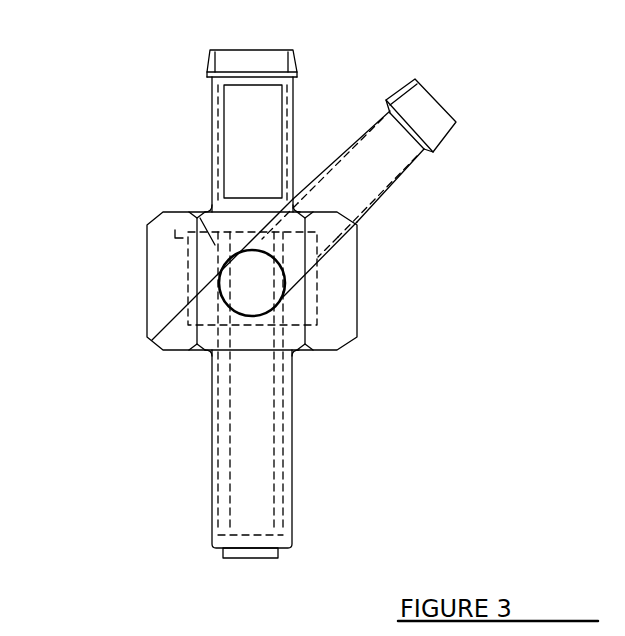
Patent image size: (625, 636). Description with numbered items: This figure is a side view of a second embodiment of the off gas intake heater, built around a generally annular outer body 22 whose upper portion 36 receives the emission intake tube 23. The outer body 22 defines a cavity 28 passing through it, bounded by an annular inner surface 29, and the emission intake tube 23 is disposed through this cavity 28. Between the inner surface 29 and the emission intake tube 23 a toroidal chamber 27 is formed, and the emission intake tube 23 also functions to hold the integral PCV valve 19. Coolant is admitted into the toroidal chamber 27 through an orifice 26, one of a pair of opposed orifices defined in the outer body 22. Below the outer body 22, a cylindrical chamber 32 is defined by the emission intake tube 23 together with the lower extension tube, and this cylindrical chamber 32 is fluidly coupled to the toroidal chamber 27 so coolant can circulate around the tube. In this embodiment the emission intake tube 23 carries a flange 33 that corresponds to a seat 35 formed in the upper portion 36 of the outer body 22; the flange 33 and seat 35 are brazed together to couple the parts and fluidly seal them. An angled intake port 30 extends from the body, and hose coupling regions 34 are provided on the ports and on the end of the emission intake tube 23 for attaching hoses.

The integral PCV valve 19 is at (235, 123).
The outer body 22 is at (347, 333).
The emission intake tube 23 is at (293, 127).
The orifice 26 is at (190, 345).
The toroidal chamber 27 is at (310, 312).
The cavity 28 is at (215, 247).
The inner surface 29 is at (205, 298).
The intake port 30 is at (372, 170).
The cylindrical chamber 32 is at (258, 525).
The flange 33 is at (190, 212).
The hose coupling region 34 is at (283, 63).
The seat 35 is at (337, 255).
The upper portion 36 is at (130, 242).